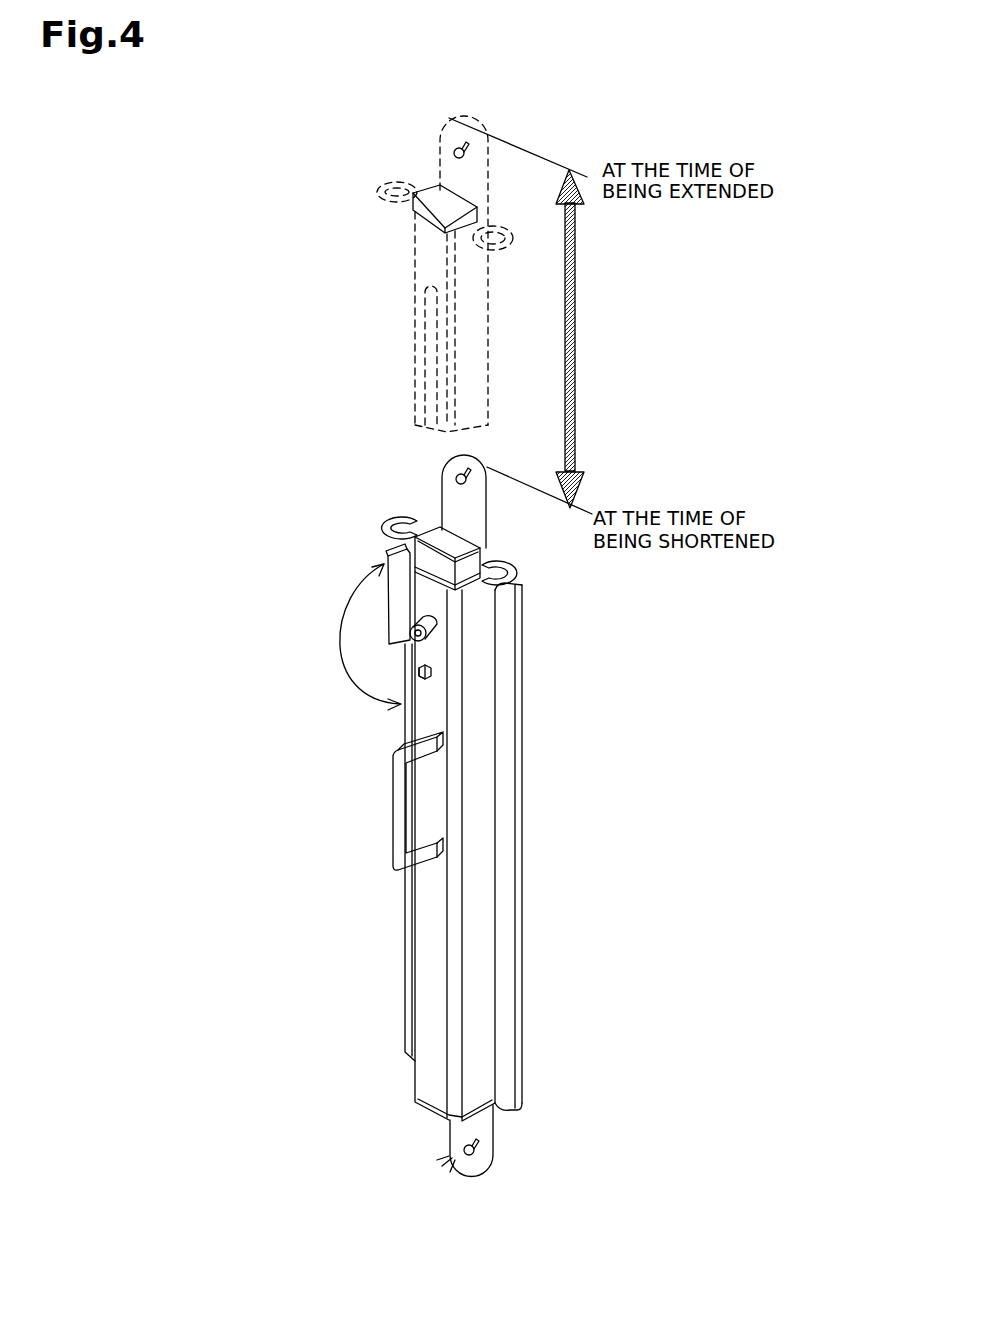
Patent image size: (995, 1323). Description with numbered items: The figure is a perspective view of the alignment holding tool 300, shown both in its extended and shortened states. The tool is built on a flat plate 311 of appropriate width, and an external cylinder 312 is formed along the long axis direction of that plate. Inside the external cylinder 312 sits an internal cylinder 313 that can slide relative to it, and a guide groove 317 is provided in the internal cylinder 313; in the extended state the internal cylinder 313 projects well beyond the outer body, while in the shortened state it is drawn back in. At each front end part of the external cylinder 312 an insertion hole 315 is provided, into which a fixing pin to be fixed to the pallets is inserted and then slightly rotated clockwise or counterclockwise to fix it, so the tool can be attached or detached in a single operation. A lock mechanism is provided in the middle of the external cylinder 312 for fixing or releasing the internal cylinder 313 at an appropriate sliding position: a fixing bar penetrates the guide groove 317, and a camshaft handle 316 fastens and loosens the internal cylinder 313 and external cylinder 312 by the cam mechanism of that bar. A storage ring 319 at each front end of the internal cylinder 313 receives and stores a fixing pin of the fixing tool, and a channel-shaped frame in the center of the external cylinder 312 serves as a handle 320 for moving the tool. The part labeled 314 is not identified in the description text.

The alignment holding tool 300 is at (705, 695).
The flat plate 311 is at (503, 788).
The external cylinder 312 is at (478, 948).
The internal cylinder 313 is at (592, 514).
The cap block 314 is at (452, 507).
The insertion hole 315 is at (455, 474).
The camshaft handle 316 is at (403, 595).
The guide groove 317 is at (432, 348).
The storage ring 319 is at (385, 532).
The handle 320 is at (397, 807).